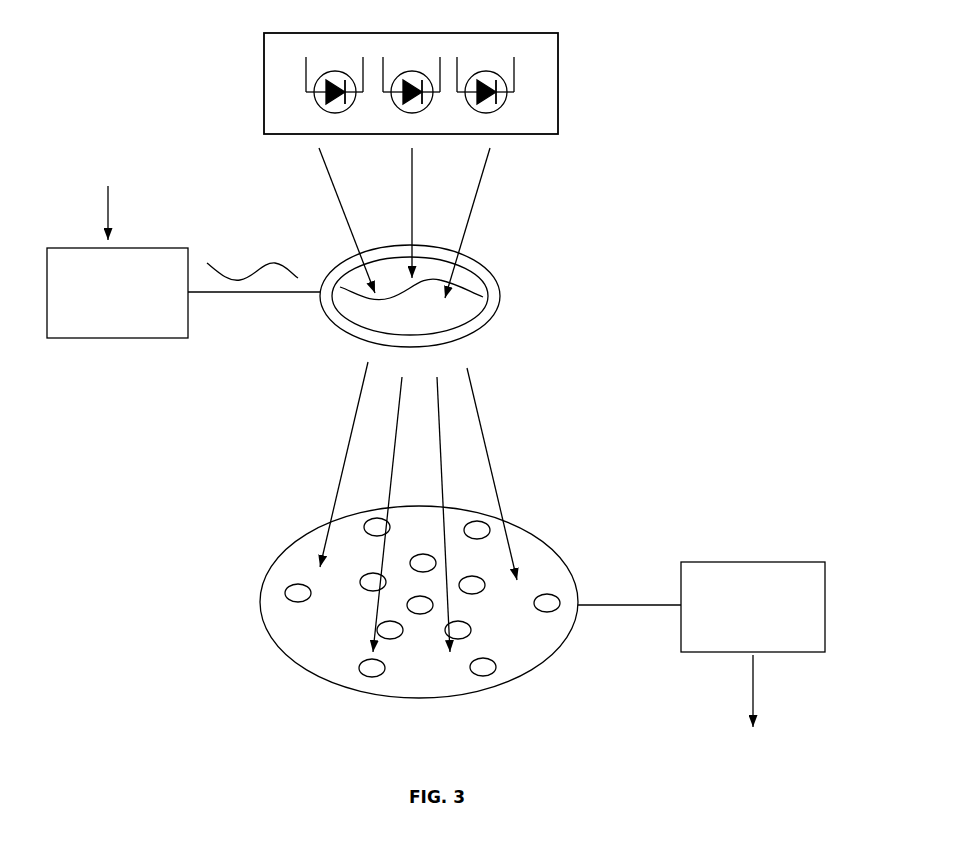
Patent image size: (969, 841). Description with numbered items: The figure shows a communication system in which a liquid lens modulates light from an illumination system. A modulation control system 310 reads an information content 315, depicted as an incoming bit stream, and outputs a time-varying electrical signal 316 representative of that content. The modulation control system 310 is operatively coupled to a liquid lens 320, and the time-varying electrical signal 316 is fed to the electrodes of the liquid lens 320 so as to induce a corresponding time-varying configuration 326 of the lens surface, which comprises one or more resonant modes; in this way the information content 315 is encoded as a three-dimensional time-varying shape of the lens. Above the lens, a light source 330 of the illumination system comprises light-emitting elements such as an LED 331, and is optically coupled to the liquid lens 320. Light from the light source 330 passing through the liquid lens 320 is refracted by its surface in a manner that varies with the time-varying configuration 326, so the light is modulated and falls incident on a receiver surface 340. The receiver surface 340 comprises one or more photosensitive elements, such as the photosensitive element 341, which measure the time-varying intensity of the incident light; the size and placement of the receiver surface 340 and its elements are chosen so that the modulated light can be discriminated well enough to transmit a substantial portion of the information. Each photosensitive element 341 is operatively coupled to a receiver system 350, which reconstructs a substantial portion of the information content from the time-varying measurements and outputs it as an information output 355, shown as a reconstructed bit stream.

The modulation control system 310 is at (112, 345).
The information content 315 is at (98, 145).
The time-varying electrical signal 316 is at (254, 261).
The liquid lens 320 is at (505, 277).
The time-varying configuration 326 is at (411, 301).
The light source 330 is at (558, 68).
The LED 331 is at (302, 73).
The receiver surface 340 is at (537, 525).
The photosensitive element 341 is at (419, 597).
The receiver system 350 is at (748, 553).
The information output 355 is at (688, 738).